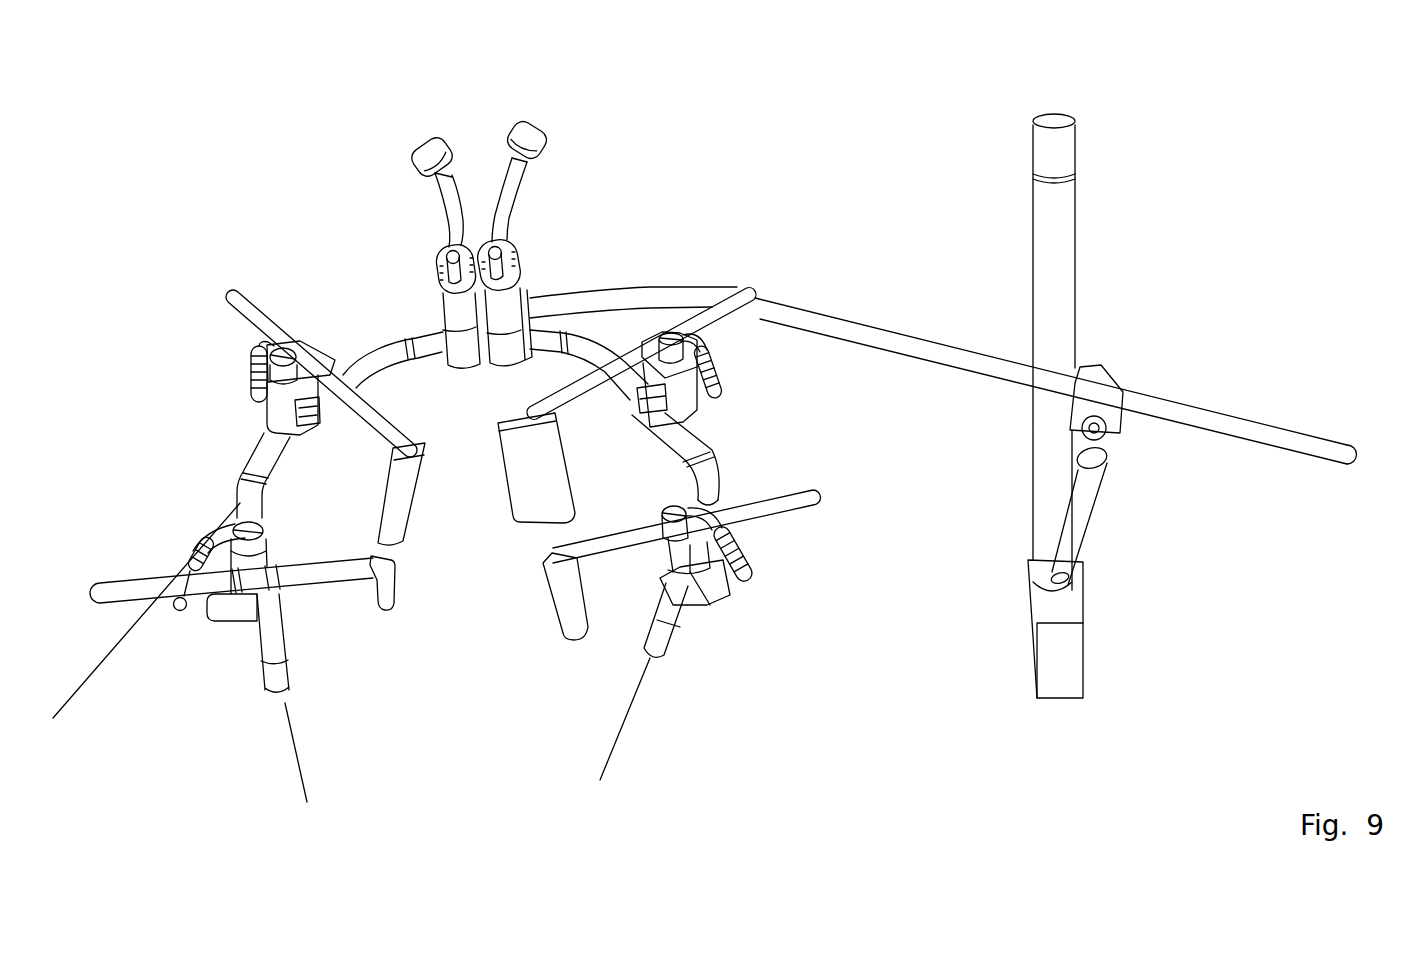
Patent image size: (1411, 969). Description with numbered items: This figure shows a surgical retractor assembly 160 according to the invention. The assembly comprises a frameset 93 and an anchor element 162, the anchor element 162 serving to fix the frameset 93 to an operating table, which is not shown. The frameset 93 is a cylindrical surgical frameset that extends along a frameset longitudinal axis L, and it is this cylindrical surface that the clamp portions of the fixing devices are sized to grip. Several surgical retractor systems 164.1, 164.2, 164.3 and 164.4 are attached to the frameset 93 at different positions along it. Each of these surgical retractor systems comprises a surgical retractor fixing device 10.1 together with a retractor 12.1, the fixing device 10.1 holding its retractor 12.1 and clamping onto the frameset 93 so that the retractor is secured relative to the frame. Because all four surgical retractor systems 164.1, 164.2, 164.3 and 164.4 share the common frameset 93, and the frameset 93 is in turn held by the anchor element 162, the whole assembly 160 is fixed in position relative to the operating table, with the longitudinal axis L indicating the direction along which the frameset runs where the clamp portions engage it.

The surgical retractor assembly 160 is at (1218, 133).
The anchor element 162 is at (1142, 642).
The frameset 93 is at (840, 330).
The surgical retractor system 164.1 is at (198, 642).
The surgical retractor system 164.2 is at (223, 378).
The surgical retractor system 164.3 is at (733, 390).
The surgical retractor system 164.4 is at (737, 610).
The surgical retractor fixing device 10.1 is at (252, 570).
The retractor 12.1 is at (327, 573).
The frameset longitudinal axis L is at (633, 742).